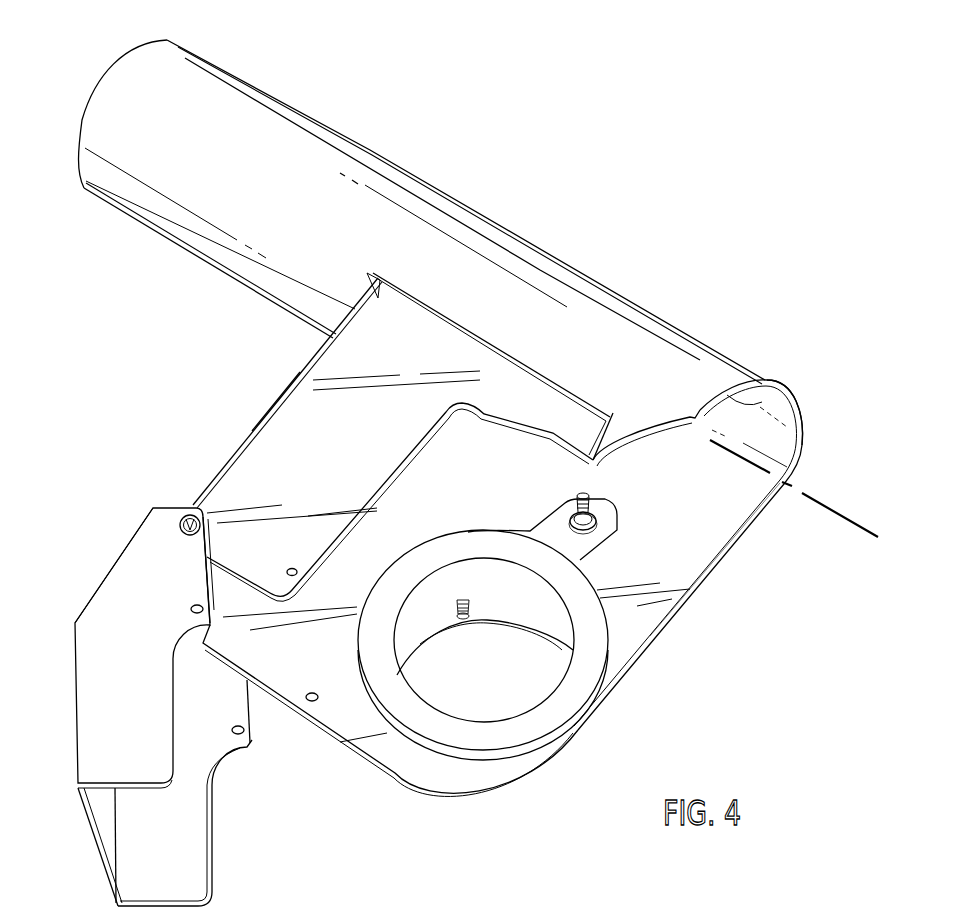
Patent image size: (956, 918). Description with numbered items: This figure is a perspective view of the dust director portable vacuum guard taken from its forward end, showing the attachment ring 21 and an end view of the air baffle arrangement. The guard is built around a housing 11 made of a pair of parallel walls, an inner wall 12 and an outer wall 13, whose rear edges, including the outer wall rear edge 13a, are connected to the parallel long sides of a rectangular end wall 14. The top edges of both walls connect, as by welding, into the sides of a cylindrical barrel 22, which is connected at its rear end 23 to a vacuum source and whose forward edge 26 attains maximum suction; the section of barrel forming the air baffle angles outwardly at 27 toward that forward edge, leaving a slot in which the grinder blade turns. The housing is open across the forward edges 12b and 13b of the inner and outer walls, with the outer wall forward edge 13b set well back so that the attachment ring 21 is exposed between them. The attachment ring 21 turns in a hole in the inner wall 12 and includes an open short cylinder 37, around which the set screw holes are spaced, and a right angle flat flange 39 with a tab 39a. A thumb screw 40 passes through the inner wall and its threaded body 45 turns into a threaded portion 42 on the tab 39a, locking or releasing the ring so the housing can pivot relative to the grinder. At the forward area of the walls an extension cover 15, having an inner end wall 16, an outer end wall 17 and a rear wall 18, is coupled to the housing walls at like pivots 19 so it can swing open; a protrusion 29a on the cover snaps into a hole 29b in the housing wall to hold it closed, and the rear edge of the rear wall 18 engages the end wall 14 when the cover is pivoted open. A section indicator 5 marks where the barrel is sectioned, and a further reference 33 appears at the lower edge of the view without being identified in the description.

The housing 11 is at (680, 633).
The inner wall 12 is at (700, 519).
The inner wall forward edge 12b is at (656, 643).
The outer wall 13 is at (342, 459).
The outer wall rear edge 13a is at (252, 428).
The outer wall forward edge 13b is at (433, 441).
The end wall 14 is at (240, 570).
The extension cover 15 is at (92, 587).
The inner end wall of extension cover 16 is at (140, 654).
The outer end wall of extension cover 17 is at (175, 852).
The rear wall of extension cover 18 is at (103, 832).
The pivots 19 is at (185, 518).
The attachment ring 21 is at (614, 670).
The barrel 22 is at (293, 206).
The barrel rear end 23 is at (110, 70).
The barrel forward edge 26 is at (783, 388).
The outward angling of air baffle 27 is at (648, 434).
The protrusion 29a is at (195, 605).
The hole 29b is at (292, 568).
The lower portion 33 is at (614, 913).
The open short cylinder 37 is at (410, 630).
The right angle flat flange 39 is at (523, 733).
The tab 39a is at (585, 543).
The thumb screw 40 is at (579, 492).
The threaded portion 42 is at (568, 520).
The threaded body 45 is at (577, 498).
The section line 5- 5 is at (893, 493).